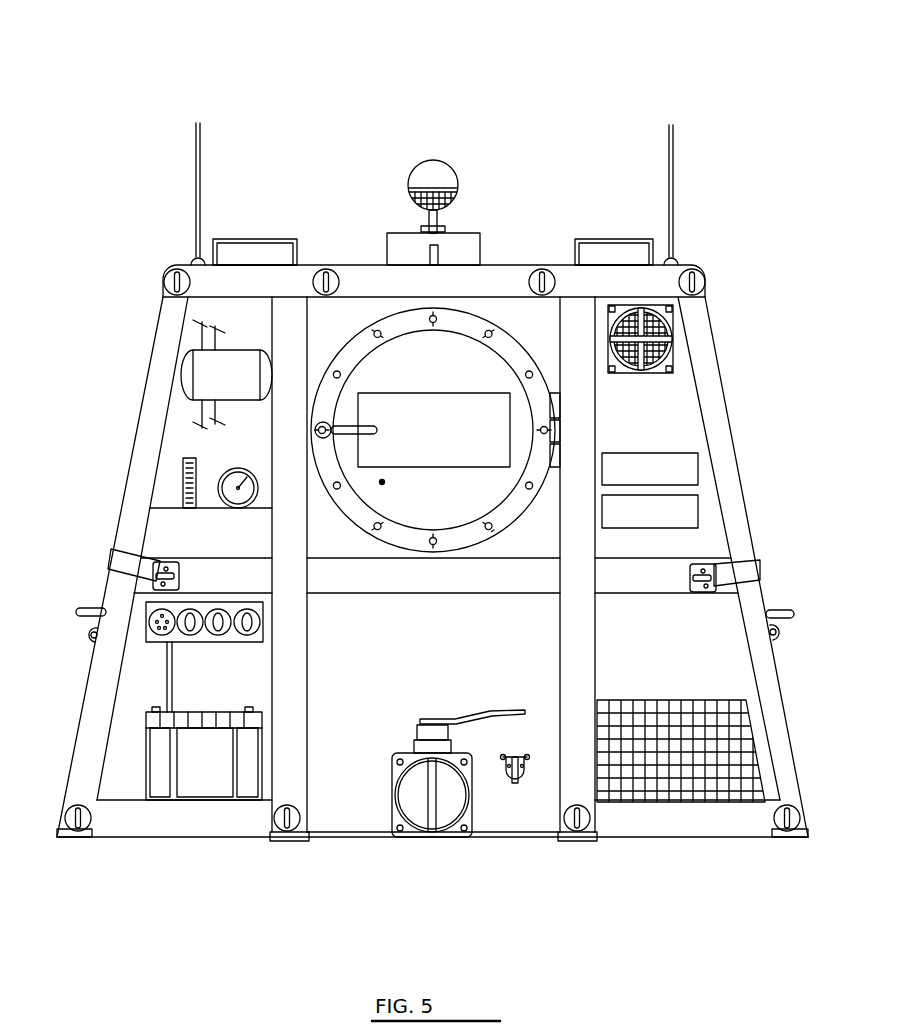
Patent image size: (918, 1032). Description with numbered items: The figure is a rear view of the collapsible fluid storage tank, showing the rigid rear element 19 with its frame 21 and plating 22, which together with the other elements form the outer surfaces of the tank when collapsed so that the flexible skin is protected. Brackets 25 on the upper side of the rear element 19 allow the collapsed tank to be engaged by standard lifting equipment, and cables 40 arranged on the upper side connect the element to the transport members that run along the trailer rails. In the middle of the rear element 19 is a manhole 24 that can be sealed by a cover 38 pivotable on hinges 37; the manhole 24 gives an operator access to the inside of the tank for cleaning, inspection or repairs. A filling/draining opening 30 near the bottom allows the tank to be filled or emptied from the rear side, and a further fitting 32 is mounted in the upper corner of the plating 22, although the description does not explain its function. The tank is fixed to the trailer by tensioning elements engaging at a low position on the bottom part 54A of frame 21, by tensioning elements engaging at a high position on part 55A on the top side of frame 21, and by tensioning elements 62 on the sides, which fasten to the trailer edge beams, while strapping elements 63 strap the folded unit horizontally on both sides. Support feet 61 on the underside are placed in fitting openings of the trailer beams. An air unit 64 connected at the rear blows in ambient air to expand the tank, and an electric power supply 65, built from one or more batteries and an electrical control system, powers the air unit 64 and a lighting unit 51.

The rear element 19 is at (783, 417).
The frame 21 is at (368, 282).
The plating 22 is at (625, 655).
The manhole 24 is at (472, 330).
The brackets 25 is at (258, 240).
The filling/draining opening 30 is at (408, 798).
The fan vent 32 is at (672, 330).
The hinges 37 is at (553, 468).
The cover 38 is at (382, 482).
The cables 40 is at (198, 158).
The lighting unit 51 is at (435, 170).
The bottom part of frame 54A is at (255, 830).
The part on top side of frame 55A is at (326, 288).
The support feet 61 is at (75, 841).
The tensioning elements 62 is at (87, 634).
The strapping elements 63 is at (743, 572).
The air unit 64 is at (192, 443).
The electric power supply 65 is at (213, 684).